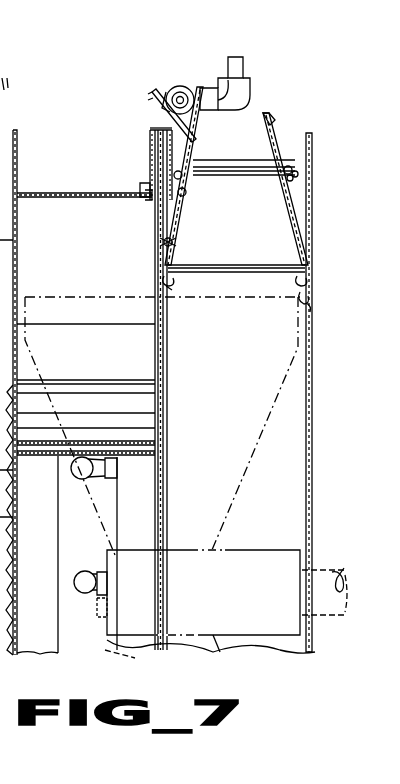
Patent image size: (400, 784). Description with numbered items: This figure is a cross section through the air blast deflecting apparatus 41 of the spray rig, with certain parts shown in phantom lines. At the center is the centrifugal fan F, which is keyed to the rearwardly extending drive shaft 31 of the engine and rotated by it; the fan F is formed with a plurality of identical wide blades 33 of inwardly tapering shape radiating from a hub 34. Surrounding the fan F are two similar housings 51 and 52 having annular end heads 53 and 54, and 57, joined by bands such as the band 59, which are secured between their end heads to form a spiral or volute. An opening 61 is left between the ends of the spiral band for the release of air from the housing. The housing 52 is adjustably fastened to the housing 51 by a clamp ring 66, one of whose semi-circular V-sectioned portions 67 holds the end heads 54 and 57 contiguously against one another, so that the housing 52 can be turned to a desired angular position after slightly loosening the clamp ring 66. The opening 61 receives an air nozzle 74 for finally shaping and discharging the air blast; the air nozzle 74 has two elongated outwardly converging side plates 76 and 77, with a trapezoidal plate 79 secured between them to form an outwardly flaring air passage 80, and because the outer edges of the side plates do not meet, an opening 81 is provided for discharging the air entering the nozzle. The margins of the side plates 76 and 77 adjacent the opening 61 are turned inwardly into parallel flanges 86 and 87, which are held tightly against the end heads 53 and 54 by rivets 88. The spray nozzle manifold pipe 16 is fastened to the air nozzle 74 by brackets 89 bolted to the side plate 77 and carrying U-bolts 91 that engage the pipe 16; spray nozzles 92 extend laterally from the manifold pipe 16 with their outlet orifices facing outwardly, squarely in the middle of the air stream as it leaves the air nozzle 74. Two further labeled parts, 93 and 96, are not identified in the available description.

The spray nozzle manifold pipe 16 is at (182, 86).
The drive shaft 31 is at (353, 543).
The blade 33 is at (95, 268).
The hub 34 is at (104, 625).
The air blast deflecting apparatus 41 is at (100, 102).
The housing 51 is at (278, 116).
The housing 52 is at (90, 190).
The annular end head 53 is at (332, 392).
The annular end head 54 is at (170, 243).
The end head 57 is at (163, 241).
The band 59 is at (127, 193).
The opening 61 is at (230, 300).
The clamp ring 66 is at (150, 130).
The semi-circular V-sectioned portion 67 is at (147, 197).
The air nozzle 74 is at (285, 157).
The side plate 76 is at (284, 197).
The side plate 77 is at (182, 218).
The trapezoidal plate 79 is at (284, 254).
The air passage 80 is at (305, 298).
The opening 81 is at (250, 132).
The flange 86 is at (310, 306).
The flange 87 is at (172, 288).
The rivet 88 is at (163, 272).
The bracket 89 is at (168, 103).
The U-bolt 91 is at (177, 64).
The spray nozzle 92 is at (245, 62).
The motor 93 is at (200, 84).
The wall panel 96 is at (313, 437).
The centrifugal fan F is at (192, 488).